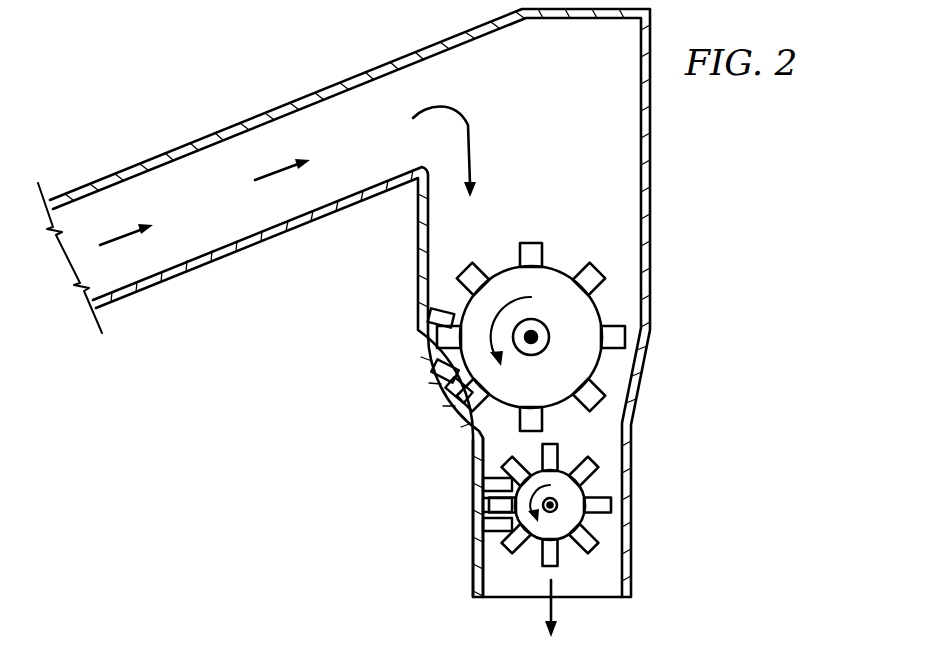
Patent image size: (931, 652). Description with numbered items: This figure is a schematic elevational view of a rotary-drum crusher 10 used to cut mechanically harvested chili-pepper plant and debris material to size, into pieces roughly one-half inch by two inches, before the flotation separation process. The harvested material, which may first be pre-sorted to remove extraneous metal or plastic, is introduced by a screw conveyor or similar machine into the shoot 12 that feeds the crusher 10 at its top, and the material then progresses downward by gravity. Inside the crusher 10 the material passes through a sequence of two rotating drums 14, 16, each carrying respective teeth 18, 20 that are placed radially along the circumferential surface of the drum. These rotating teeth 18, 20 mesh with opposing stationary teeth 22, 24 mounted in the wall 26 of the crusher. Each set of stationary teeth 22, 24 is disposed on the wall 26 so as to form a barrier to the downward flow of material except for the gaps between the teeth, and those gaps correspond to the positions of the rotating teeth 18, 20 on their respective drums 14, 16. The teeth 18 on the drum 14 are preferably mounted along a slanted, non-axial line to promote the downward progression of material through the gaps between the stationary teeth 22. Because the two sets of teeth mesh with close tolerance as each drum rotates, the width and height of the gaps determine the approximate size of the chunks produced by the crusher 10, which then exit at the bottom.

The crusher 10 is at (733, 222).
The shoot 12 is at (575, 117).
The rotating drum 14 is at (590, 351).
The rotating drum 16 is at (590, 518).
The teeth 18 is at (537, 242).
The teeth 20 is at (597, 465).
The stationary teeth 22 is at (432, 406).
The stationary teeth 24 is at (490, 537).
The wall 26 is at (478, 446).